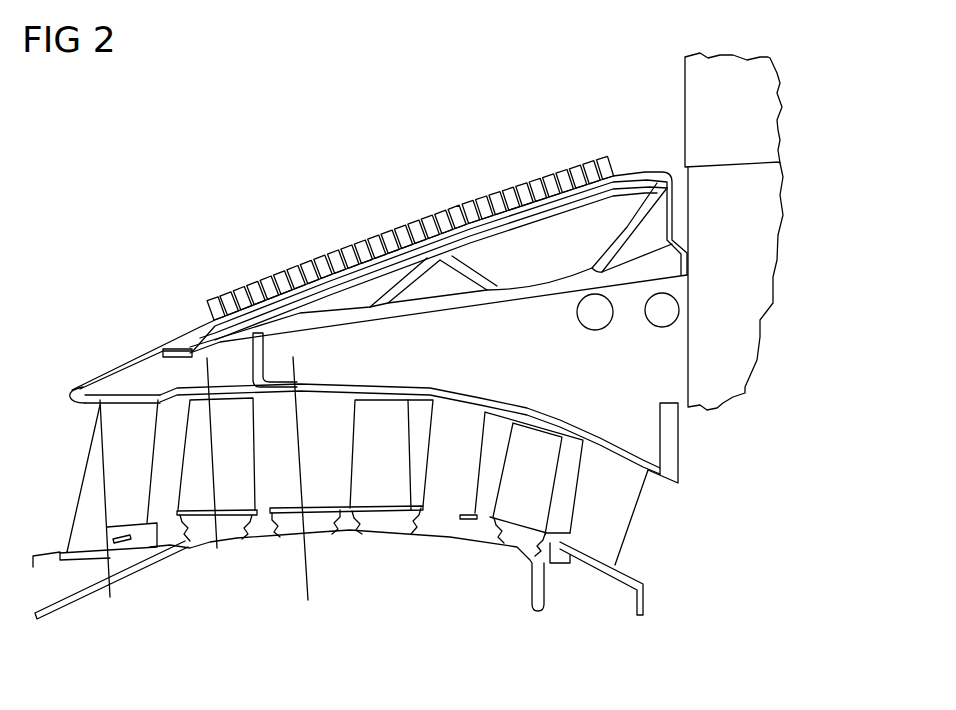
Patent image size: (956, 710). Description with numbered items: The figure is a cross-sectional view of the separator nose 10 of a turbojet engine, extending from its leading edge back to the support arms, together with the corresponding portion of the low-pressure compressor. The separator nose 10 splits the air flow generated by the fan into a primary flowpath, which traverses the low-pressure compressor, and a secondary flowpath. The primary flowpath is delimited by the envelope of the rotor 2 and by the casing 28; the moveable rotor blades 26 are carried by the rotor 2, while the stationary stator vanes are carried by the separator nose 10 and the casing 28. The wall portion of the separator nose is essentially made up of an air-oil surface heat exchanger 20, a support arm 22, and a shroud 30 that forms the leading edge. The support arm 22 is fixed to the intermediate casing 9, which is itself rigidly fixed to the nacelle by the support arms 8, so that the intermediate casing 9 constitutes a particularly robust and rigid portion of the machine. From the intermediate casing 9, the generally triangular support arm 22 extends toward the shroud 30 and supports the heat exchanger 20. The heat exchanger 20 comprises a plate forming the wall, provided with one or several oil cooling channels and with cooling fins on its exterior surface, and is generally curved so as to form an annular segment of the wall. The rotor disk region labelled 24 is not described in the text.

The rotor 2 is at (392, 686).
The support arms 8 is at (693, 111).
The intermediate casing 9 is at (742, 363).
The separator nose 10 is at (137, 385).
The air-oil surface heat exchanger 20 is at (357, 223).
The support arm 22 is at (531, 304).
The rotor disk 24 is at (222, 505).
The rotor blades 26 is at (88, 487).
The casing 28 is at (468, 393).
The shroud 30 is at (143, 339).